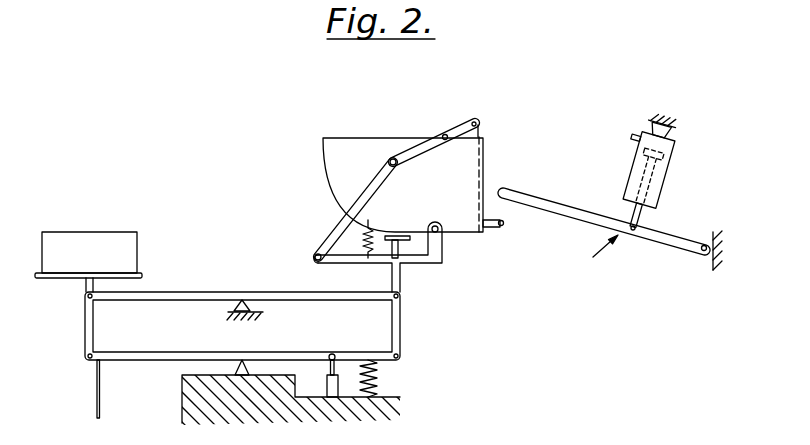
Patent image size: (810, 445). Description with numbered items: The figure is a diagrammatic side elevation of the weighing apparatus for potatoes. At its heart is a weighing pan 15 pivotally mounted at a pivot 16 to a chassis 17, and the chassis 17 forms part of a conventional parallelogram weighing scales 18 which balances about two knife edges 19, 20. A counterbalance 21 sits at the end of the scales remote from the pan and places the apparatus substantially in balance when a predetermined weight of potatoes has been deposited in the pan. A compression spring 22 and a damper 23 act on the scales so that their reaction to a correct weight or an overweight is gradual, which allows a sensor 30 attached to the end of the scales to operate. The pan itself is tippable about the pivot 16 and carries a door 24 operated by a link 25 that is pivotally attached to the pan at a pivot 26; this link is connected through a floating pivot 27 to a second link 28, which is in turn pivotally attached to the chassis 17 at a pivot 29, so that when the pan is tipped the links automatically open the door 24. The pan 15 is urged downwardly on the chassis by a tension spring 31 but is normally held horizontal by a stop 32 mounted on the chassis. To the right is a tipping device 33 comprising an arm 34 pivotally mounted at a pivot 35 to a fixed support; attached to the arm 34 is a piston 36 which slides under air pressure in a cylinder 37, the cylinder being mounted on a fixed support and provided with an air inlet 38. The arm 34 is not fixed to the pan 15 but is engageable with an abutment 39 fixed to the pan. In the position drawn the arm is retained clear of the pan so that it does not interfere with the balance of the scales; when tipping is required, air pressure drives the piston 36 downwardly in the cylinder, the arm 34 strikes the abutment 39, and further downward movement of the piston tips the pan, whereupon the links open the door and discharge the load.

The weighing pan 15 is at (342, 147).
The pivot 16 is at (438, 231).
The chassis 17 is at (418, 259).
The parallelogram weighing scales 18 is at (221, 292).
The knife edge 19 is at (244, 299).
The knife edge 20 is at (242, 377).
The counterbalance 21 is at (128, 248).
The compression spring 22 is at (377, 382).
The damper 23 is at (338, 386).
The door 24 is at (485, 160).
The link 25 is at (422, 149).
The pivot 26 is at (444, 134).
The floating pivot 27 is at (390, 158).
The second link 28 is at (352, 223).
The pivot 29 is at (315, 253).
The sensor 30 is at (100, 404).
The tension spring 31 is at (367, 229).
The stop 32 is at (396, 241).
The tipping device 33 is at (591, 253).
The arm 34 is at (531, 196).
The pivot 35 is at (704, 245).
The piston 36 is at (637, 163).
The cylinder 37 is at (639, 152).
The air inlet 38 is at (629, 139).
The abutment 39 is at (500, 228).